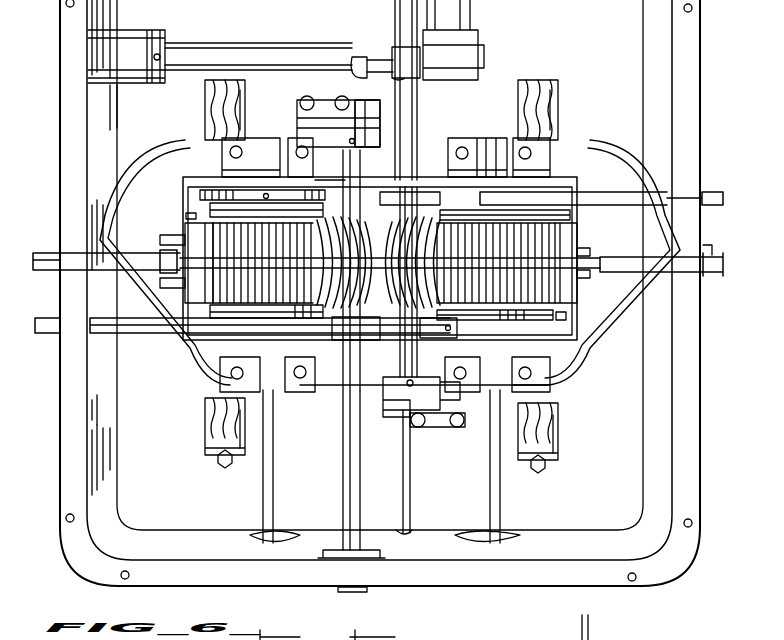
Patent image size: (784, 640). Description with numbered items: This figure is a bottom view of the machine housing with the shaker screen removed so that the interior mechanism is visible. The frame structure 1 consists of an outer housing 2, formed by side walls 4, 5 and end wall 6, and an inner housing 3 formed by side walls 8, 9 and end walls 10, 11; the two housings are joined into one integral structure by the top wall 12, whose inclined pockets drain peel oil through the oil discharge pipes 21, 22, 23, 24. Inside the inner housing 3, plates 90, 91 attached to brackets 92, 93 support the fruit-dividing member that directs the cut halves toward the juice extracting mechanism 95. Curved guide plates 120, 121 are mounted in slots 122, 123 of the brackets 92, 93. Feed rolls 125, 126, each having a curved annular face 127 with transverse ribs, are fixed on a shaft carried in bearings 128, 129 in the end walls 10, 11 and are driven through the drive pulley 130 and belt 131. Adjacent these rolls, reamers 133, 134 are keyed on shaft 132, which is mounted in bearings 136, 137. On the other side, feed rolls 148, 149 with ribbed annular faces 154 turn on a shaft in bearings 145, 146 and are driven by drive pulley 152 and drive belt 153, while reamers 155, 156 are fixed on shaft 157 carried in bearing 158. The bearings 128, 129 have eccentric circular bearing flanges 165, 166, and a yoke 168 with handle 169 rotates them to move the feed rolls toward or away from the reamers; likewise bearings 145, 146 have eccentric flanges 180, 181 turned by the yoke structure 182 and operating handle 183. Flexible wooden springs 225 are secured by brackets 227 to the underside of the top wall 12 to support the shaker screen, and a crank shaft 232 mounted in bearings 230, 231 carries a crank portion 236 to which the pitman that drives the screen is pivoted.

The frame structure 1 is at (700, 75).
The outer housing 2 is at (635, 150).
The inner housing 3 is at (558, 178).
The side wall 4 is at (95, 418).
The side wall 5 is at (663, 448).
The end wall 6 is at (566, 556).
The side wall 8 is at (175, 222).
The side wall 9 is at (580, 325).
The end wall 10 is at (218, 350).
The end wall 11 is at (205, 180).
The top wall 12 is at (602, 39).
The oil discharge pipe 21 is at (38, 255).
The oil discharge pipe 22 is at (722, 278).
The oil discharge pipe 23 is at (713, 190).
The oil discharge pipe 24 is at (45, 325).
The plate 90 is at (368, 195).
The plate 91 is at (386, 338).
The bracket 92 is at (190, 290).
The bracket 93 is at (578, 232).
The juice extracting mechanism 95 is at (438, 190).
The guide plate 120 is at (269, 314).
The guide plate 121 is at (438, 328).
The slot 122 is at (333, 212).
The slot 123 is at (505, 211).
The feed roll 125 is at (190, 278).
The feed roll 126 is at (185, 250).
The curved annular face 127 is at (183, 240).
The bearing 128 is at (278, 398).
The bearing 129 is at (298, 125).
The drive pulley 130 is at (266, 201).
The belt 131 is at (199, 208).
The shaft 132 is at (360, 480).
The reamer 133 is at (356, 328).
The reamer 134 is at (342, 186).
The bearing 136 is at (385, 548).
The bearing 137 is at (368, 110).
The bearing 145 is at (462, 425).
The bearing 146 is at (478, 125).
The feed roll 148 is at (560, 280).
The feed roll 149 is at (560, 243).
The drive pulley 152 is at (496, 324).
The drive belt 153 is at (570, 318).
The annular face 154 is at (568, 234).
The reamer 155 is at (410, 196).
The reamer 156 is at (400, 360).
The shaft 157 is at (405, 10).
The bearing 158 is at (395, 385).
The circular bearing flange 165 is at (258, 360).
The circular bearing flange 166 is at (262, 170).
The yoke 168 is at (150, 158).
The handle 169 is at (50, 272).
The circular bearing flange 180 is at (535, 360).
The circular bearing flange 181 is at (530, 170).
The yoke structure 182 is at (600, 140).
The operating handle 183 is at (722, 246).
The flexible wooden spring 225 is at (205, 98).
The bracket 227 is at (207, 125).
The bearing 230 is at (160, 30).
The bearing 231 is at (453, 40).
The crank shaft 232 is at (235, 45).
The crank portion 236 is at (372, 60).